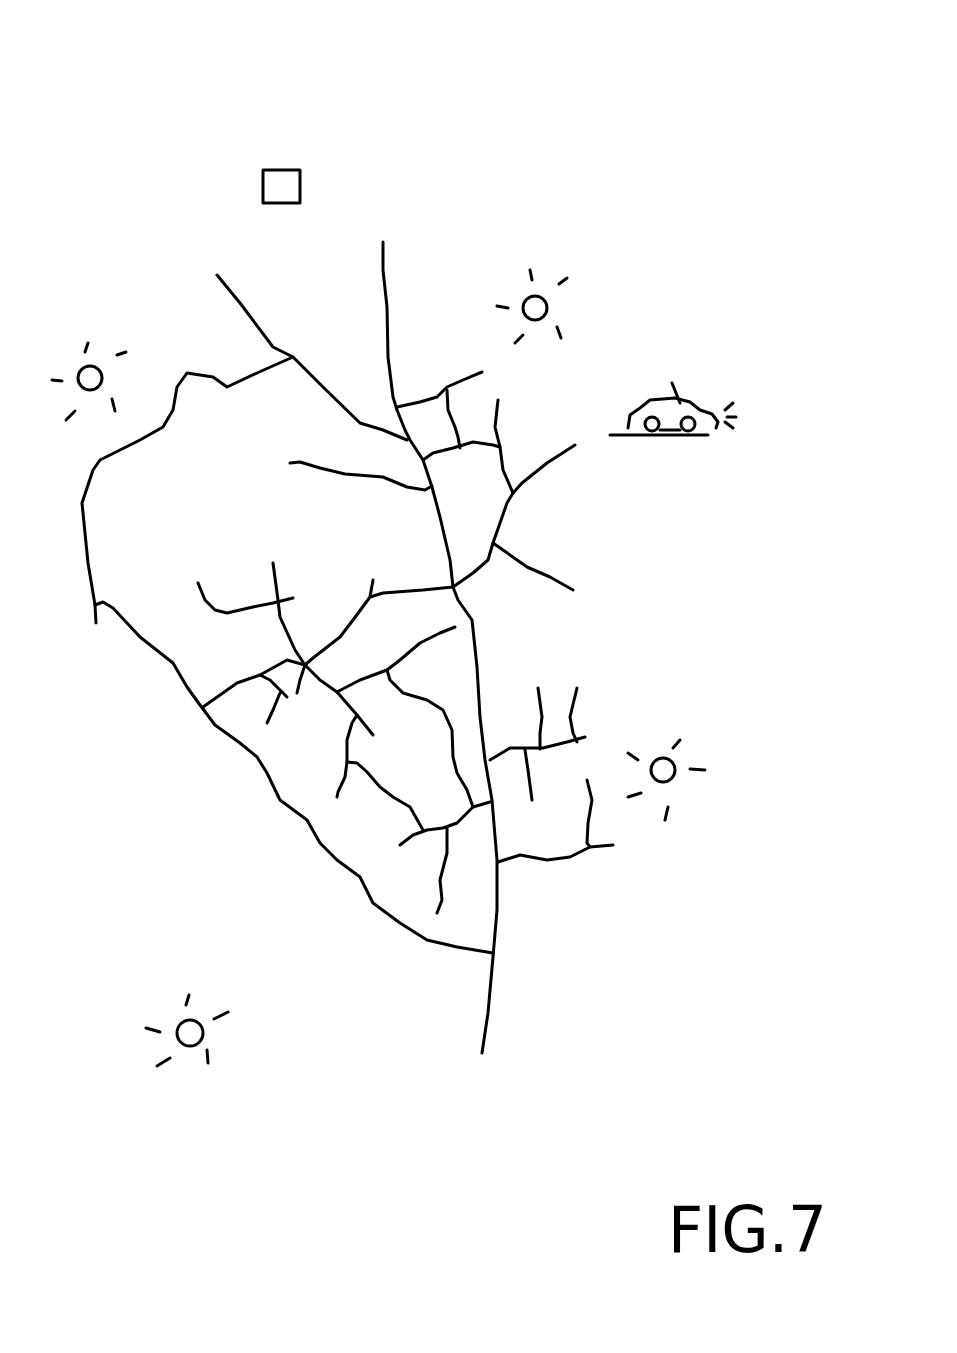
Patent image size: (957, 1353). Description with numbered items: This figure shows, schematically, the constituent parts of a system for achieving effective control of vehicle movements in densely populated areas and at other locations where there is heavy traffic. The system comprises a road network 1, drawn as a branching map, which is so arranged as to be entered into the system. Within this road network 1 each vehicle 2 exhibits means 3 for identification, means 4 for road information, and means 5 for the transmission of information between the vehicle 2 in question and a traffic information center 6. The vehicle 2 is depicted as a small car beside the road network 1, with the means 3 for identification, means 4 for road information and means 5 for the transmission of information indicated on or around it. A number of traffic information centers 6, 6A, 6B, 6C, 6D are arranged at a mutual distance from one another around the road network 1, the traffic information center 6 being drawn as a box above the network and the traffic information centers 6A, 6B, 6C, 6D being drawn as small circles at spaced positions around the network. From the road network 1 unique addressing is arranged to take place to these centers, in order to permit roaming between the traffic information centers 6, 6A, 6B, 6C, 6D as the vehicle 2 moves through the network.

The road network 1 is at (545, 907).
The vehicle 2 is at (693, 387).
The means for identification 3 is at (713, 408).
The means for road information 4 is at (752, 418).
The means for the transmission of information 5 is at (733, 437).
The traffic information center 6 is at (300, 173).
The traffic information center 6A is at (95, 366).
The traffic information center 6B is at (542, 296).
The traffic information center 6C is at (197, 1047).
The traffic information center 6D is at (668, 758).